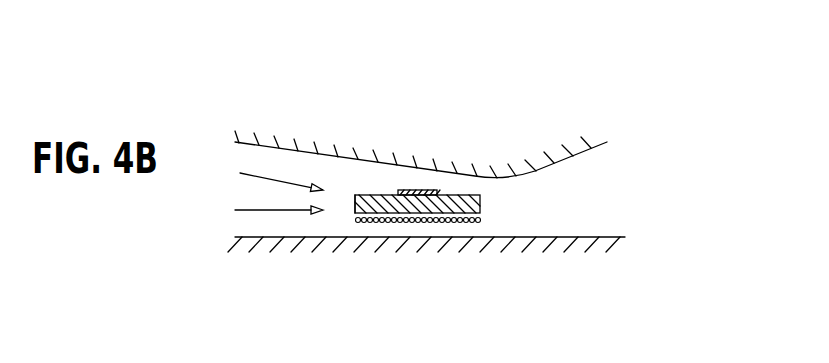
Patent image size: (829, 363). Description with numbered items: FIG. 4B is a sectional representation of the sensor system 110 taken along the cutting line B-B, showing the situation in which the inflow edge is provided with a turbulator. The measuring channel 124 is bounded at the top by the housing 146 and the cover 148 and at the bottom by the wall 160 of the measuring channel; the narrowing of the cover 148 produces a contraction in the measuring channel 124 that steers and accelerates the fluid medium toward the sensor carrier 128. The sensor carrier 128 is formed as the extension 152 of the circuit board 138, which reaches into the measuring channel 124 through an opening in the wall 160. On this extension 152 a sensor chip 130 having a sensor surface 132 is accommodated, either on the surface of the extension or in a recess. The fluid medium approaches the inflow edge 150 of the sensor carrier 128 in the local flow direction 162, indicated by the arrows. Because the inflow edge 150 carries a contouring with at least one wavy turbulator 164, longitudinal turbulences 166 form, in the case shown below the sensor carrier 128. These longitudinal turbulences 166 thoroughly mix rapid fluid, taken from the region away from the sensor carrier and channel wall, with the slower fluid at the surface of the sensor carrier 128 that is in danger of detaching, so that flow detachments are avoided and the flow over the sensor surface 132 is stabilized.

The sensor system 110 is at (533, 116).
The measuring channel 124 is at (285, 226).
The sensor carrier 128 is at (547, 189).
The sensor chip 130 is at (453, 132).
The sensor surface 132 is at (426, 190).
The circuit board 138 is at (547, 189).
The housing 146 is at (383, 153).
The cover 148 is at (426, 172).
The inflow edge 150 is at (345, 133).
The extension 152 is at (480, 203).
The wall 160 is at (426, 172).
The local flow direction 162 is at (253, 210).
The turbulator 164 is at (353, 200).
The longitudinal turbulences 166 is at (395, 223).